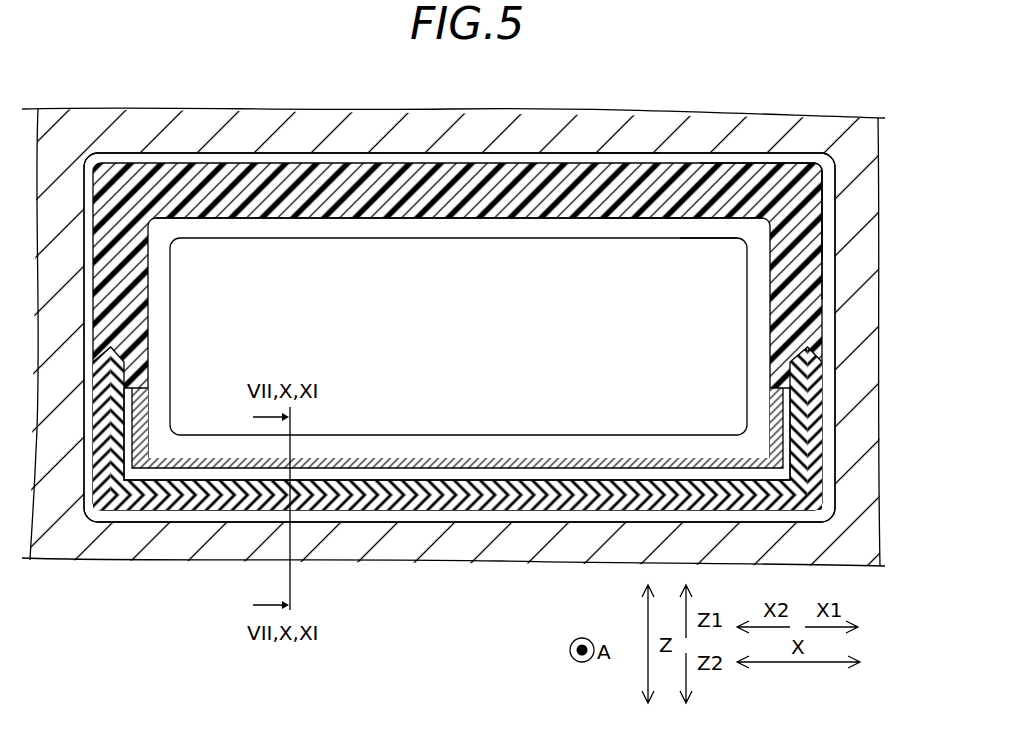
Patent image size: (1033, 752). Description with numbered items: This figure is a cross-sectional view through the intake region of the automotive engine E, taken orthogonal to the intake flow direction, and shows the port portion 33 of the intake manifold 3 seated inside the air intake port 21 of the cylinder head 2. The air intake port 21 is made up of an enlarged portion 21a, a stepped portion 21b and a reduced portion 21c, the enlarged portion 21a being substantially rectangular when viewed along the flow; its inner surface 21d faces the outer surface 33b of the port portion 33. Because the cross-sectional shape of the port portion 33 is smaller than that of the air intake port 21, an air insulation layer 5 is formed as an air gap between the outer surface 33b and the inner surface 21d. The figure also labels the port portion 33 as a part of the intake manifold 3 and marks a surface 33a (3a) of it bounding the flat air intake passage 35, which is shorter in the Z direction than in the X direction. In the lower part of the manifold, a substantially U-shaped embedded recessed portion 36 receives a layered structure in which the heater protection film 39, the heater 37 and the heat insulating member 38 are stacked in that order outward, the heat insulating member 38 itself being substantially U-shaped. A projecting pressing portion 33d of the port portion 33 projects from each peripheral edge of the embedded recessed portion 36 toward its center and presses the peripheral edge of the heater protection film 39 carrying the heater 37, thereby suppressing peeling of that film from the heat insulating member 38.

The automotive engine E is at (111, 107).
The cylinder head 2 is at (372, 128).
The air insulation layer 5 is at (302, 158).
The air intake port 21 is at (245, 158).
The enlarged portion 21a is at (607, 137).
The stepped portion 21b is at (637, 230).
The reduced portion 21c is at (712, 255).
The inner surface 21d is at (812, 167).
The port portion 33 is at (468, 166).
The intake manifold 3 is at (457, 284).
The upper surface of insulating layer 33a is at (547, 228).
The upper surface of insulating layer 3a is at (459, 152).
The outer surface 33b is at (748, 163).
The projecting pressing portion 33d is at (782, 370).
The air intake passage 35 is at (416, 262).
The embedded recessed portion 36 is at (812, 396).
The heater 37 is at (802, 418).
The heat insulating member 38 is at (790, 432).
The heater protection film 39 is at (818, 378).